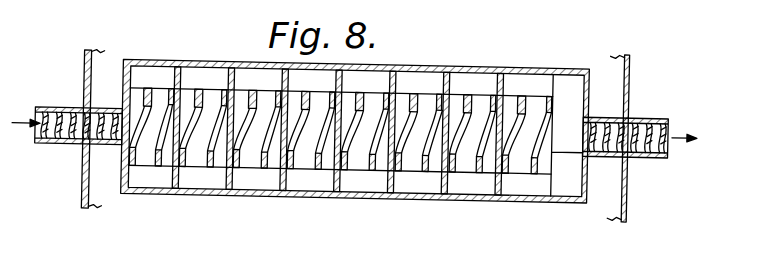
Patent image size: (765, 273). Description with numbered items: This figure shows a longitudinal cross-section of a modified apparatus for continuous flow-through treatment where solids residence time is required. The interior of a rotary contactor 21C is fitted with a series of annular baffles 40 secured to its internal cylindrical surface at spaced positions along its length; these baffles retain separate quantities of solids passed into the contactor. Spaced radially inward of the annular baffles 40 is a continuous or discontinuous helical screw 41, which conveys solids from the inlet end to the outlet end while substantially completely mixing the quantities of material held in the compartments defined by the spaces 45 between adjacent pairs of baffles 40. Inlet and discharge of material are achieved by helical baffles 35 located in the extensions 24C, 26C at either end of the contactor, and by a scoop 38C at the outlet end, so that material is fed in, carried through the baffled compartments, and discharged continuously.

The rotary contactor 21C is at (437, 65).
The extension 24C is at (50, 143).
The extension 26C is at (650, 157).
The helical baffles 35 is at (60, 108).
The scoop 38C is at (566, 187).
The annular baffles 40 is at (177, 183).
The helical screw 41 is at (146, 92).
The spaces 45 is at (209, 76).